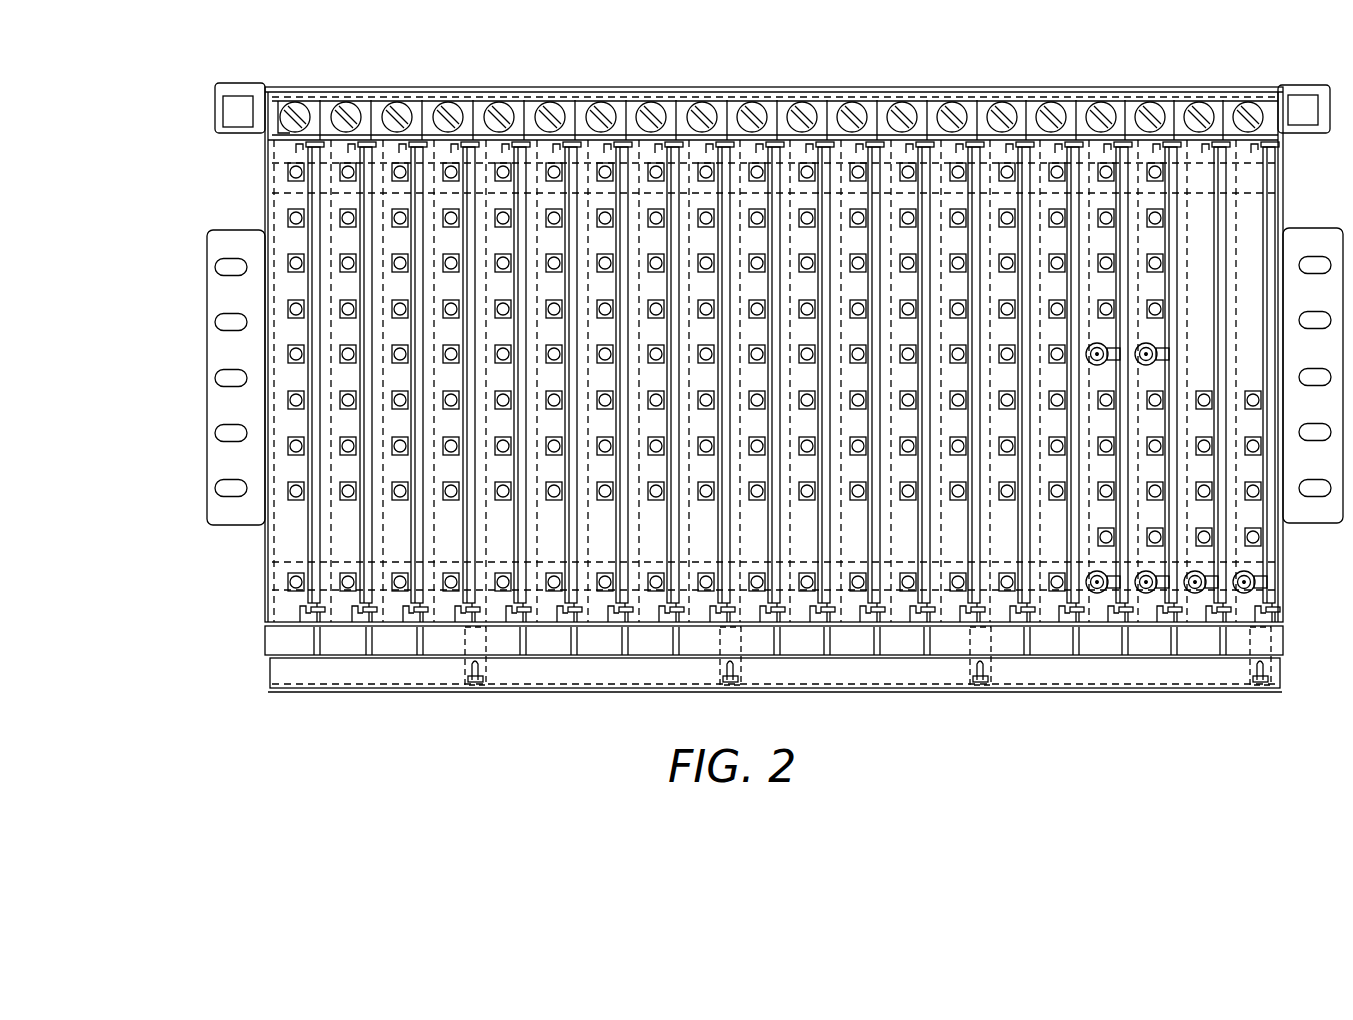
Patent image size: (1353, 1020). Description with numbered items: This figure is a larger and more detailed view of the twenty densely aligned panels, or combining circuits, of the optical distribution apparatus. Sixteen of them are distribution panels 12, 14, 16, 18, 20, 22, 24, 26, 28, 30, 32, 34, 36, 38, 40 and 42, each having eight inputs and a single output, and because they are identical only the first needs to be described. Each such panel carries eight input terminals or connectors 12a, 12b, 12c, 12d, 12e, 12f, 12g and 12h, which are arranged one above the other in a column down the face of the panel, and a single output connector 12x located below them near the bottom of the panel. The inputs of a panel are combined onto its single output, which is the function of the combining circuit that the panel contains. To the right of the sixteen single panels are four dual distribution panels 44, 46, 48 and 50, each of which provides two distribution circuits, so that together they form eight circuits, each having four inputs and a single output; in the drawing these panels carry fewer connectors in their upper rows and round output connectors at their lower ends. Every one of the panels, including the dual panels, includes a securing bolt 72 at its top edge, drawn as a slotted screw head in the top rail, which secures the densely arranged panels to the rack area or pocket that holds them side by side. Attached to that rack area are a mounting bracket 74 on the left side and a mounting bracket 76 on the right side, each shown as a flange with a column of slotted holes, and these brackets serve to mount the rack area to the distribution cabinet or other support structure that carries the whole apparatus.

The distribution panel 12 is at (282, 151).
The input connector 12a is at (287, 173).
The input connector 12b is at (286, 214).
The input connector 12c is at (287, 263).
The input connector 12d is at (287, 308).
The input connector 12e is at (287, 354).
The input connector 12f is at (287, 399).
The input connector 12g is at (287, 447).
The input connector 12h is at (287, 492).
The output connector 12x is at (290, 582).
The distribution panel 14 is at (335, 145).
The distribution panel 16 is at (387, 145).
The distribution panel 18 is at (438, 145).
The distribution panel 20 is at (490, 145).
The distribution panel 22 is at (541, 145).
The distribution panel 24 is at (592, 145).
The distribution panel 26 is at (643, 145).
The distribution panel 28 is at (693, 145).
The distribution panel 30 is at (744, 145).
The distribution panel 32 is at (794, 145).
The distribution panel 34 is at (845, 145).
The distribution panel 36 is at (895, 145).
The distribution panel 38 is at (945, 145).
The distribution panel 40 is at (994, 145).
The distribution panel 42 is at (1044, 145).
The dual distribution panel 44 is at (1093, 145).
The dual distribution panel 46 is at (1142, 145).
The dual distribution panel 48 is at (1191, 145).
The dual distribution panel 50 is at (1240, 145).
The securing bolt 72 is at (300, 101).
The mounting bracket 74 is at (240, 524).
The mounting bracket 76 is at (1317, 511).